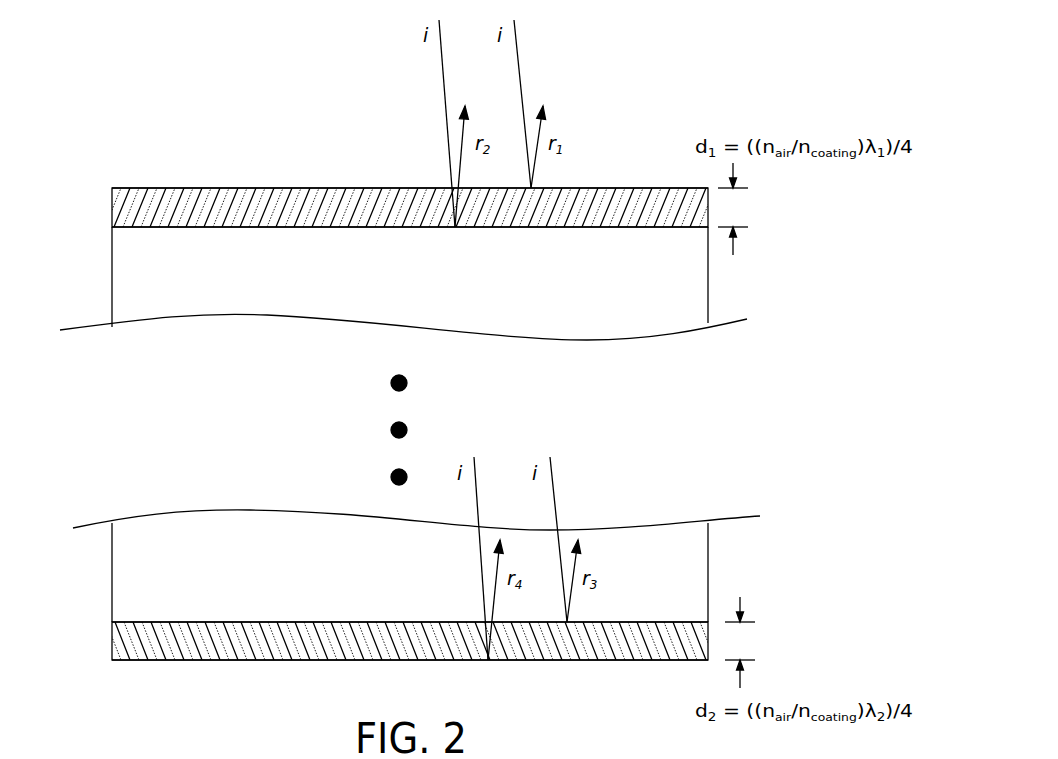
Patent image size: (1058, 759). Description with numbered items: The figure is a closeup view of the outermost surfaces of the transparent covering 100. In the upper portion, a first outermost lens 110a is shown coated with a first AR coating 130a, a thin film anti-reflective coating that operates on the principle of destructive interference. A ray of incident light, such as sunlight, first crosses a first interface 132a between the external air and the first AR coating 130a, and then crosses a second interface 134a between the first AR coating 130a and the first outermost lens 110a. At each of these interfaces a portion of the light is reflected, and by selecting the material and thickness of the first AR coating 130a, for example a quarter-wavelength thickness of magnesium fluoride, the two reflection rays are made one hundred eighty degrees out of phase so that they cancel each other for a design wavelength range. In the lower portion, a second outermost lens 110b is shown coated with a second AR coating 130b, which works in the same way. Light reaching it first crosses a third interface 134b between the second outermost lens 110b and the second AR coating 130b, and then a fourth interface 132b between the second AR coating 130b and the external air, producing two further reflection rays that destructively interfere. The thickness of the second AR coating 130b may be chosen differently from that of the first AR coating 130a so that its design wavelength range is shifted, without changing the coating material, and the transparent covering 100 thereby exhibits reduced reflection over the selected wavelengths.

The transparent covering 100 is at (166, 92).
The first outermost lens 110a is at (120, 265).
The first AR coating 130a is at (218, 197).
The first interface 132a is at (330, 188).
The second interface 134a is at (292, 227).
The second outermost lens 110b is at (122, 573).
The second AR coating 130b is at (165, 660).
The fourth interface 132b is at (260, 660).
The third interface 134b is at (300, 622).